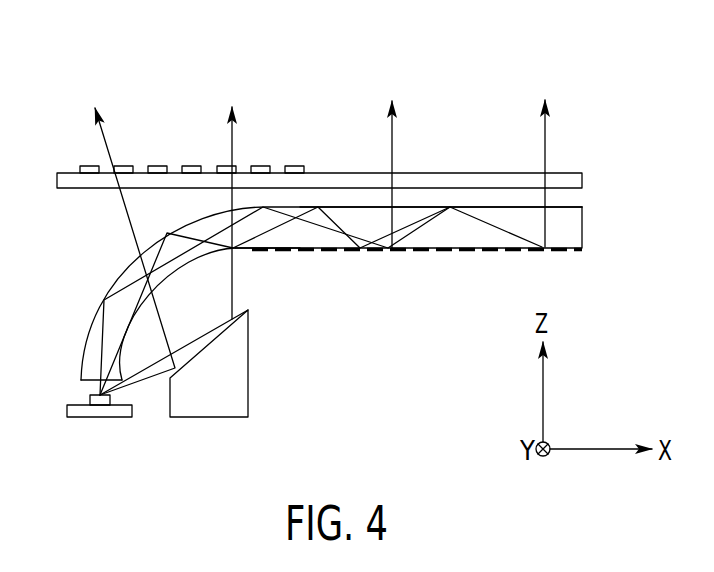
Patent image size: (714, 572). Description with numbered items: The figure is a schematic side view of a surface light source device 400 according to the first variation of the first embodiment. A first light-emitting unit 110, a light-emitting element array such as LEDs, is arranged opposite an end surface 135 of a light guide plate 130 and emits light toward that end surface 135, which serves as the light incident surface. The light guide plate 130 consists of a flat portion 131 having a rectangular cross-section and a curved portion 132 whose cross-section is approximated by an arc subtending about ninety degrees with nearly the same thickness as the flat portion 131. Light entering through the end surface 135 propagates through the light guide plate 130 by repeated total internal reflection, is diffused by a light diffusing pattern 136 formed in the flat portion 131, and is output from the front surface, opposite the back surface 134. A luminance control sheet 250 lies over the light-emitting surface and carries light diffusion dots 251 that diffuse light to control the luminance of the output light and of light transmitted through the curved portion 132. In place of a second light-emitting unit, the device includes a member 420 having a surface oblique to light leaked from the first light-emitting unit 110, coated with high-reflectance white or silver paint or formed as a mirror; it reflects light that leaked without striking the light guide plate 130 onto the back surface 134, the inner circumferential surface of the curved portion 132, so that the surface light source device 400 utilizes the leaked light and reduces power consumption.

The surface light source device 400 is at (107, 78).
The first light-emitting unit 110 is at (100, 417).
The light guide plate 130 is at (85, 338).
The flat portion 131 is at (467, 222).
The curved portion 132 is at (125, 275).
The back surface 134 is at (413, 207).
The end surface 135 is at (82, 383).
The light diffusing pattern 136 is at (408, 253).
The luminance control sheet 250 is at (312, 173).
The light diffusion dots 251 is at (82, 166).
The member corresponding to the second light-emitting unit 420 is at (193, 415).